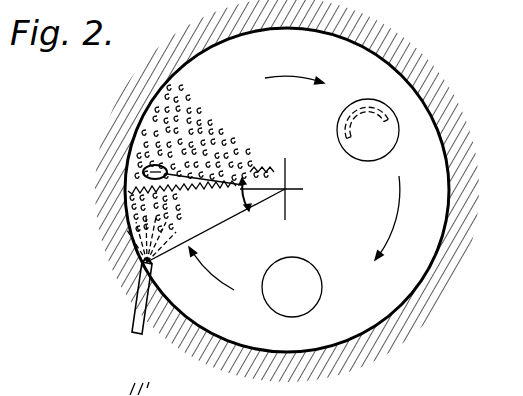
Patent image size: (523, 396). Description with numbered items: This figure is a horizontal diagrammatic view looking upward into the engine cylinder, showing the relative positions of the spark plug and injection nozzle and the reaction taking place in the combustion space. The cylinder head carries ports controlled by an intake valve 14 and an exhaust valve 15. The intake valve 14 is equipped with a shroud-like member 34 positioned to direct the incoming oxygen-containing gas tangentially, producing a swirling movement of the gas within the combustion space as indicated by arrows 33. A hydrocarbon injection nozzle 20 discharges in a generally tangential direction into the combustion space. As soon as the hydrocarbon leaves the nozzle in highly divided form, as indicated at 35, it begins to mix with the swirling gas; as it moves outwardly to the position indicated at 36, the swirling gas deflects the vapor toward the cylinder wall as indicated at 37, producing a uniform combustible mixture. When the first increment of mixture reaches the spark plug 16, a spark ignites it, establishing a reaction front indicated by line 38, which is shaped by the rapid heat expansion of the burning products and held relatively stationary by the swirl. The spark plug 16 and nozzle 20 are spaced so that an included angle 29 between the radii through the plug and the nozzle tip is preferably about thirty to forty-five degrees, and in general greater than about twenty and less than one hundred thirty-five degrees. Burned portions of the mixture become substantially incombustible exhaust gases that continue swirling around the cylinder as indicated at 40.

The intake valve 14 is at (398, 145).
The exhaust valve 15 is at (310, 308).
The spark plug 16 is at (143, 170).
The hydrocarbon injection nozzle 20 is at (133, 322).
The included angle 29 is at (256, 203).
The arrows 33 is at (273, 78).
The shroud-like member 34 is at (387, 105).
The highly divided hydrocarbon discharge 35 is at (145, 262).
The outward hydrocarbon position 36 is at (143, 220).
The deflected hydrocarbon vapor 37 is at (143, 197).
The reaction front 38 is at (128, 181).
The swirling exhaust gases 40 is at (180, 100).